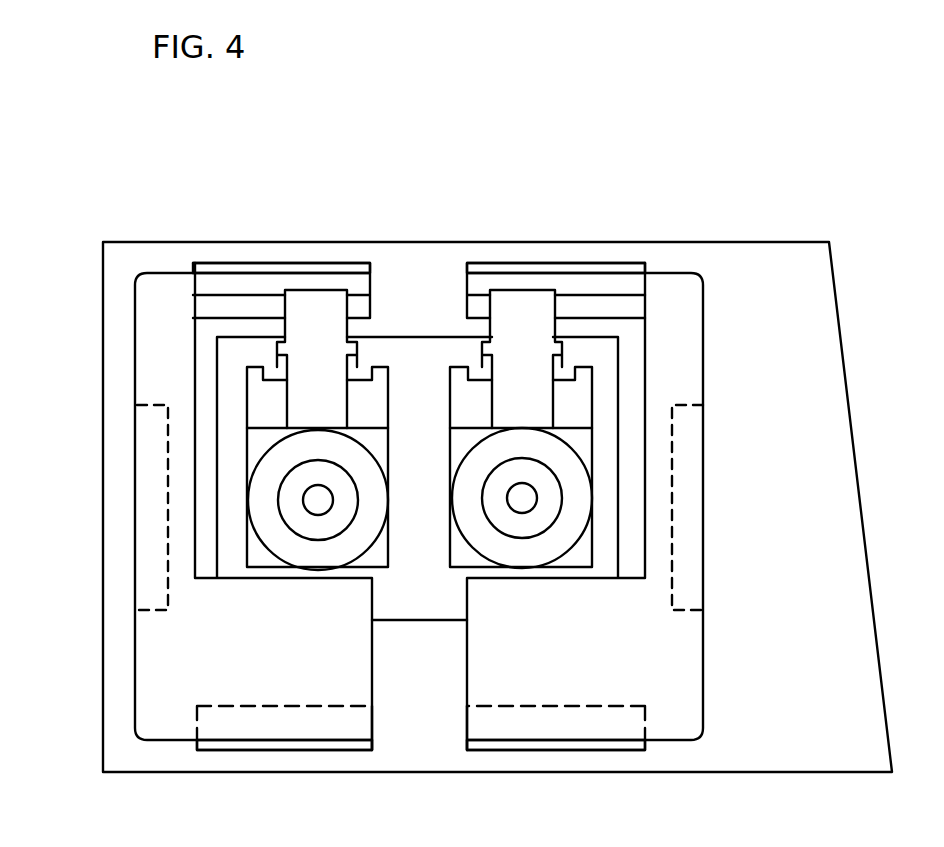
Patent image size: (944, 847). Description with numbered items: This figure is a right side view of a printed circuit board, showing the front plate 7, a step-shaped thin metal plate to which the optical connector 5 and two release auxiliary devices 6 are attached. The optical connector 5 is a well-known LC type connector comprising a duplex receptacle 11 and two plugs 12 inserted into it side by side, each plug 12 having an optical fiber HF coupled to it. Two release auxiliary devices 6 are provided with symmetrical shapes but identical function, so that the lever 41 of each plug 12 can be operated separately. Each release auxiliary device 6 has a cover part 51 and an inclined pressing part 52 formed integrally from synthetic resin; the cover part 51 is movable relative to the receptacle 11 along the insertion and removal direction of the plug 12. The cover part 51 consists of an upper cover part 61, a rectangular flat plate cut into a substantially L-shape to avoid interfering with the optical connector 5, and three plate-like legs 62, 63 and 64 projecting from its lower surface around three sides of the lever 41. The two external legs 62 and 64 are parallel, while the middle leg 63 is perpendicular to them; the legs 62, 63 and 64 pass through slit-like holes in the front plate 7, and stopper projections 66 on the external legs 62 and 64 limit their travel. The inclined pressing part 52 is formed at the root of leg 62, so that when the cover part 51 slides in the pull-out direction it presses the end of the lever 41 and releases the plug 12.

The optical connector 5 is at (518, 183).
The release auxiliary device 6 is at (135, 280).
The front plate 7 is at (750, 250).
The receptacle 11 is at (417, 350).
The plug 12 is at (280, 537).
The lever 41 is at (310, 305).
The cover part 51 is at (135, 362).
The inclined pressing part 52 is at (358, 308).
The upper cover part 61 is at (155, 325).
The leg 62 is at (213, 265).
The leg 63 is at (137, 452).
The leg 64 is at (272, 745).
The stopper projection 66 is at (253, 267).
The optical fiber HF is at (320, 503).